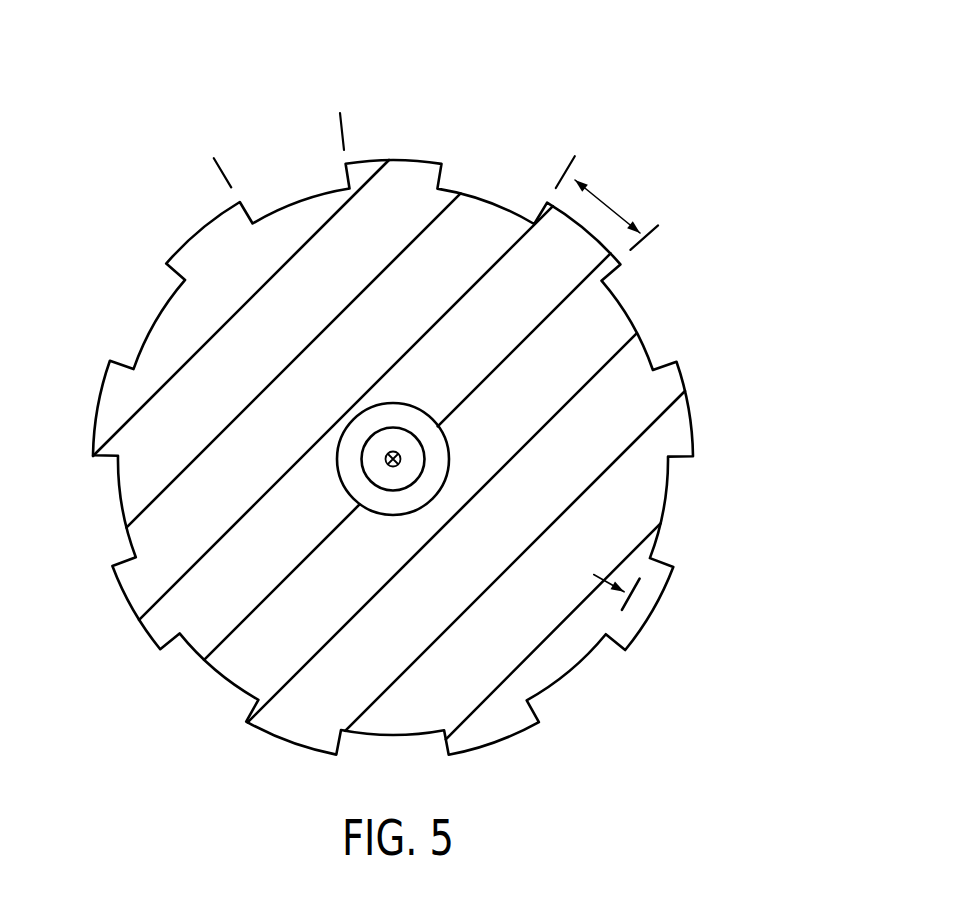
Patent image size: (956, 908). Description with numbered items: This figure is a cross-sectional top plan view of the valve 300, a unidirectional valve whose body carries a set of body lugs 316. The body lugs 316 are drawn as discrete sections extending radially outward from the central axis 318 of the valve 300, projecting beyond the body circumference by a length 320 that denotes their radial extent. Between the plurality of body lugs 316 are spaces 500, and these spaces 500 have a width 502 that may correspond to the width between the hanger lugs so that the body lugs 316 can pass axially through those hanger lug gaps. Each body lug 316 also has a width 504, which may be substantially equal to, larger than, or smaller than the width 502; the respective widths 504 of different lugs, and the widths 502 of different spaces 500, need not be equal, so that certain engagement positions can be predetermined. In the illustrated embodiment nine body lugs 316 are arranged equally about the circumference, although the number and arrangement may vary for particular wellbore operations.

The valve 300 is at (436, 401).
The body lugs 316 is at (670, 383).
The axis 318 is at (397, 452).
The length 320 is at (658, 611).
The spaces 500 is at (255, 112).
The width 502 is at (343, 132).
The width 504 is at (608, 203).